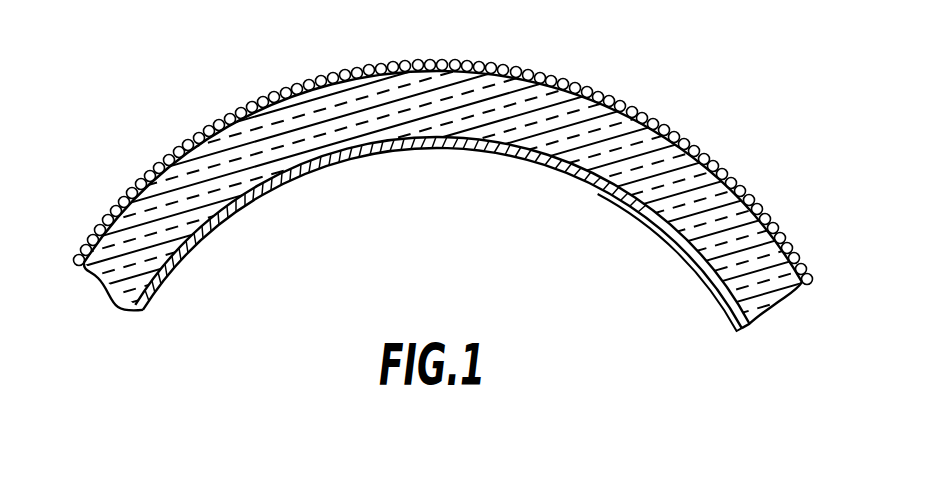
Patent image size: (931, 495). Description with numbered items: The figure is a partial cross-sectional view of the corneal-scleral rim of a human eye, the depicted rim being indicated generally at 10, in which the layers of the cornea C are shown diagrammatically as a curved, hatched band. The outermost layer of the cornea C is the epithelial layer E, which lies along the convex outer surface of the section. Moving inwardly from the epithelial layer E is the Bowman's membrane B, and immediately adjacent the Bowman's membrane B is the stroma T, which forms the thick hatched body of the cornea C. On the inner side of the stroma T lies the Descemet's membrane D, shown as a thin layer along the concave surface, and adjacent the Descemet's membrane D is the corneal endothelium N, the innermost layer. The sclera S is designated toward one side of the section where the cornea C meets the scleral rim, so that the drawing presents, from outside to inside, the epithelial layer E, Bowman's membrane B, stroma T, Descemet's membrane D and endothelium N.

The lens body section 10 is at (389, 178).
The cornea C is at (265, 77).
The epithelial layer E is at (520, 70).
The Bowman's membrane B is at (677, 135).
The stroma T is at (706, 192).
The sclera S is at (750, 243).
The Descemet's membrane D is at (660, 230).
The corneal endothelium N is at (708, 280).